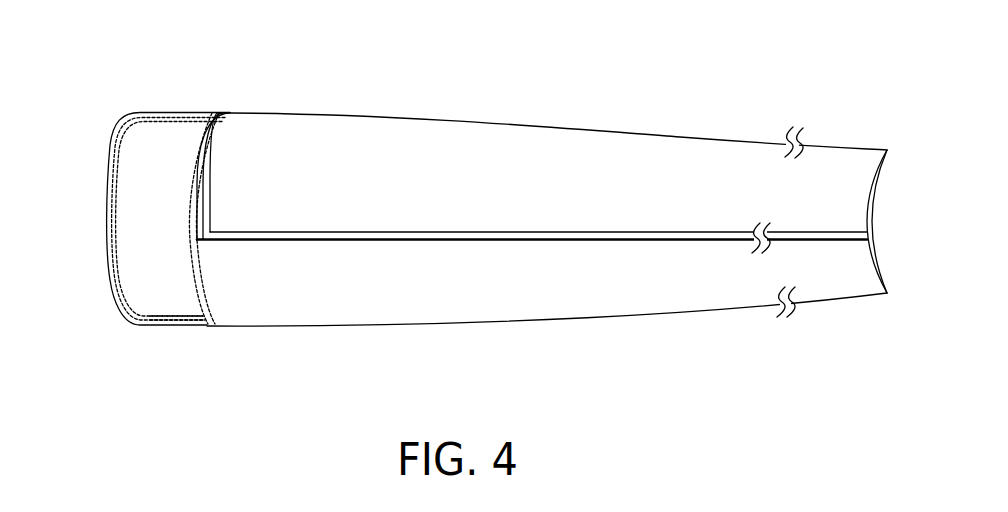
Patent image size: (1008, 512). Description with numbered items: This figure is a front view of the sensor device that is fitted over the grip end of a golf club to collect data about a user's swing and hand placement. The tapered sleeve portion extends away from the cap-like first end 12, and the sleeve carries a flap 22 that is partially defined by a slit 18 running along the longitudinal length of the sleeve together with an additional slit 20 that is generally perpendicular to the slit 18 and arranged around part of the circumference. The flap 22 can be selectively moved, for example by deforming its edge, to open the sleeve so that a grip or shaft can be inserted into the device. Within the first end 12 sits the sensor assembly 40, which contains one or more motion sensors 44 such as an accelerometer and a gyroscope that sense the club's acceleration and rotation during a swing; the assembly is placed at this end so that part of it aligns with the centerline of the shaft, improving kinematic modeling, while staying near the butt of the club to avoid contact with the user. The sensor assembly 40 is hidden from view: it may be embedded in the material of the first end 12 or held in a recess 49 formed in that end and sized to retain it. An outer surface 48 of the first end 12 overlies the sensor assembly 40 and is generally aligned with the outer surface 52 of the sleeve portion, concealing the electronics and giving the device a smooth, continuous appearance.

The first end 12 is at (116, 299).
The slit 18 is at (567, 232).
The additional slit 20 is at (230, 112).
The flap 22 is at (575, 158).
The sensor assembly 40 is at (140, 253).
The motion sensors 44 is at (152, 172).
The outer surface 48 is at (182, 108).
The recess 49 is at (190, 327).
The outer surface of the sleeve portion 52 is at (522, 121).